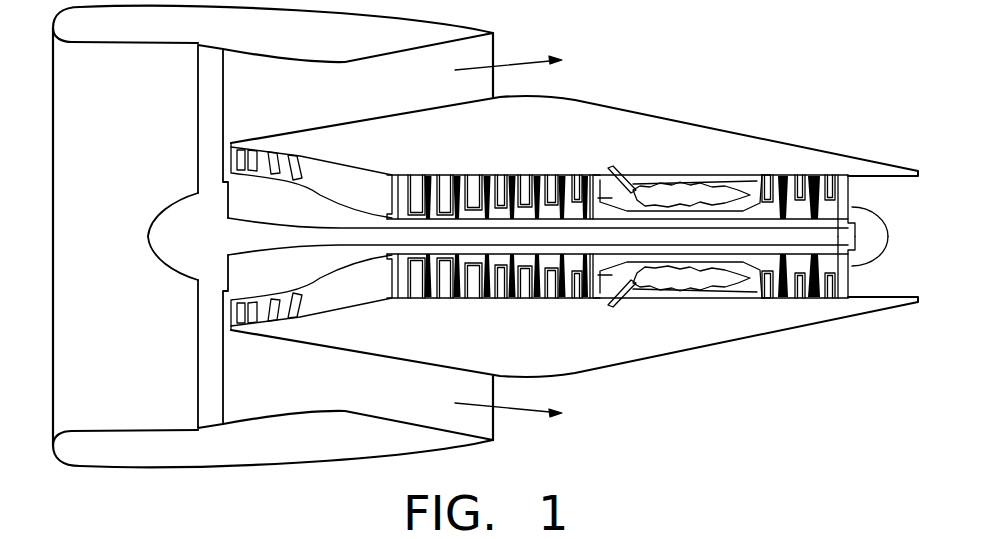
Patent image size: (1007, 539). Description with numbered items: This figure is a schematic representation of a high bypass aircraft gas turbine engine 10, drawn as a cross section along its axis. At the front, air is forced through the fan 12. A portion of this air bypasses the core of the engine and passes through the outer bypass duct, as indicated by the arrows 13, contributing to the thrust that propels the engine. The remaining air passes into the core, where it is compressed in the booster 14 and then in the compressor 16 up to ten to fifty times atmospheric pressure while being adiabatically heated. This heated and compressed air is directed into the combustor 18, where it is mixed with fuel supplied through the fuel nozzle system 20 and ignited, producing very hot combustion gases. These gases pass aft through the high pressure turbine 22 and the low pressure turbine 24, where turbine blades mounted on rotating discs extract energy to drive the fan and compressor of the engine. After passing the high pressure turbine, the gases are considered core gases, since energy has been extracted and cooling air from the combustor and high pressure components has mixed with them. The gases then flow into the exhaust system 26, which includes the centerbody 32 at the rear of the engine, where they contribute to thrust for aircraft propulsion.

The high bypass aircraft gas turbine engine 10 is at (485, 242).
The fan 12 is at (197, 353).
The arrows 13 is at (518, 57).
The booster 14 is at (260, 150).
The compressor 16 is at (473, 177).
The combustor 18 is at (672, 181).
The fuel nozzle system 20 is at (623, 173).
The high pressure turbine 22 is at (787, 296).
The low pressure turbine 24 is at (813, 296).
The exhaust system 26 is at (906, 162).
The centerbody 32 is at (885, 245).